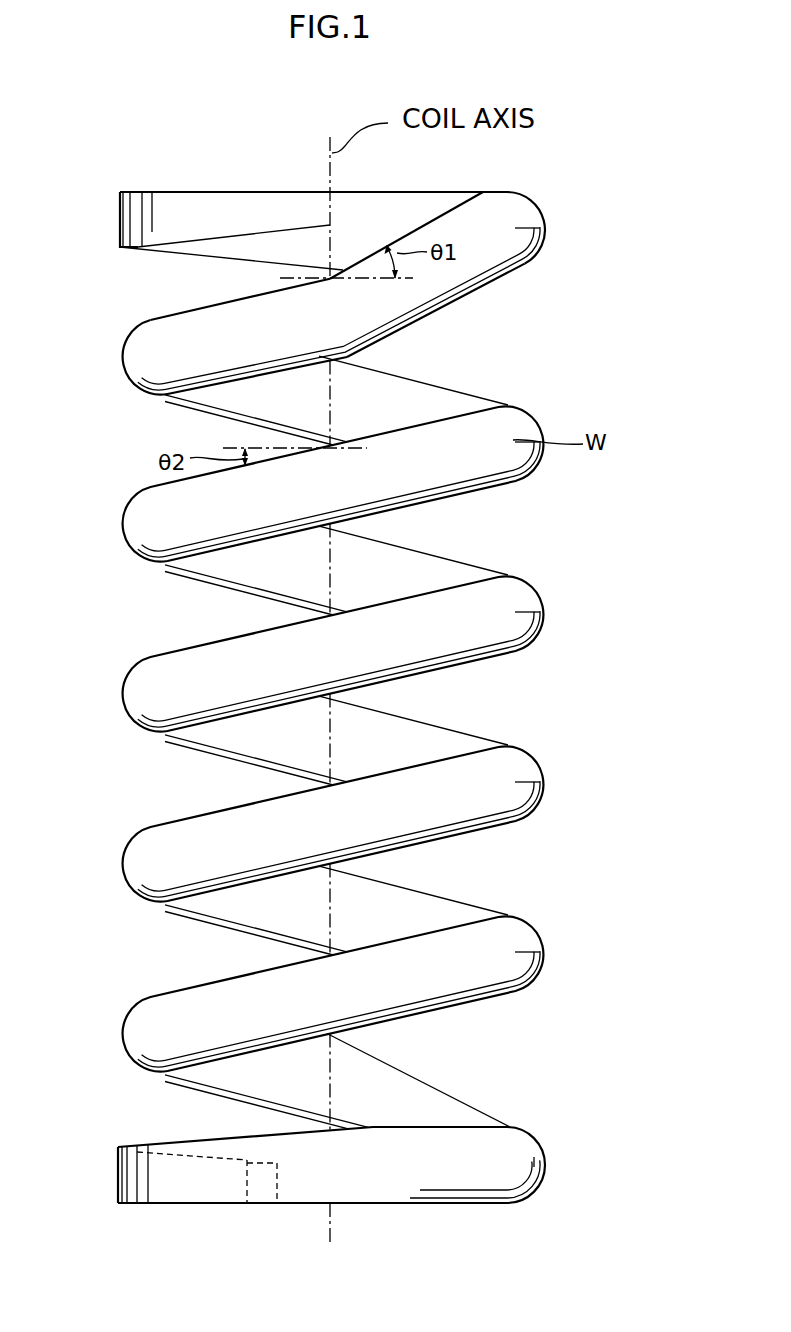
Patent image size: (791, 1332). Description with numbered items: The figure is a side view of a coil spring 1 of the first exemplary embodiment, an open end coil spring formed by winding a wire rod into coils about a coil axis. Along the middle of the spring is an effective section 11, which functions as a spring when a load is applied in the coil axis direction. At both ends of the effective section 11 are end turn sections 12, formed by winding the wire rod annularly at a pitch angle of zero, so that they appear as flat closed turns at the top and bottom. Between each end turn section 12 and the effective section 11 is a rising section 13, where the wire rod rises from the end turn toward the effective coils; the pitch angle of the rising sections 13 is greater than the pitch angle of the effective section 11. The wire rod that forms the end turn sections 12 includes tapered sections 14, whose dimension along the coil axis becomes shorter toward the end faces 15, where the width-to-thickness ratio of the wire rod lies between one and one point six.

The coil spring 1 is at (330, 701).
The effective section 11 is at (540, 605).
The end turn section 12 is at (143, 213).
The rising section 13 is at (458, 275).
The tapered section 14 is at (207, 240).
The end face 15 is at (330, 210).